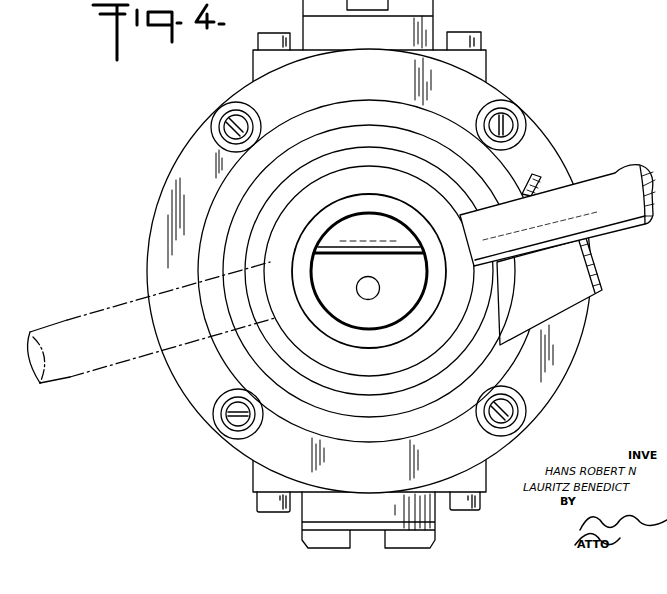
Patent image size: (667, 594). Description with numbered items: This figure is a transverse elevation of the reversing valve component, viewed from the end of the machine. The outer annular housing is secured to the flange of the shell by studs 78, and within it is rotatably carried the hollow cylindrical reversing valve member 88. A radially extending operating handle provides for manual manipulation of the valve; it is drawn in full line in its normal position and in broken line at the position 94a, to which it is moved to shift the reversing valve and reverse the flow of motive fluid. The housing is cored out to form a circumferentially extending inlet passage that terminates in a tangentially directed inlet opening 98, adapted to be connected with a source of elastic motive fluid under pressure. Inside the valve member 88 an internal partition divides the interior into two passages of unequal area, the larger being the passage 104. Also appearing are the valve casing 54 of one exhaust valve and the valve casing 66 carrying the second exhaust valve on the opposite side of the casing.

The valve casing 54 is at (486, 64).
The valve casing 66 is at (477, 480).
The studs 78 is at (520, 117).
The hollow cylindrical reversing valve member 88 is at (411, 191).
The broken line position of the operating handle 94a is at (108, 282).
The inlet opening 98 is at (393, 312).
The passage 104 is at (398, 279).